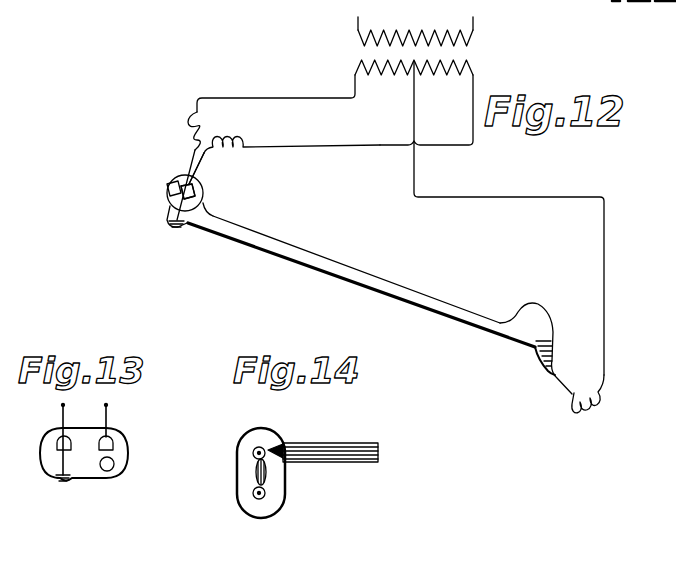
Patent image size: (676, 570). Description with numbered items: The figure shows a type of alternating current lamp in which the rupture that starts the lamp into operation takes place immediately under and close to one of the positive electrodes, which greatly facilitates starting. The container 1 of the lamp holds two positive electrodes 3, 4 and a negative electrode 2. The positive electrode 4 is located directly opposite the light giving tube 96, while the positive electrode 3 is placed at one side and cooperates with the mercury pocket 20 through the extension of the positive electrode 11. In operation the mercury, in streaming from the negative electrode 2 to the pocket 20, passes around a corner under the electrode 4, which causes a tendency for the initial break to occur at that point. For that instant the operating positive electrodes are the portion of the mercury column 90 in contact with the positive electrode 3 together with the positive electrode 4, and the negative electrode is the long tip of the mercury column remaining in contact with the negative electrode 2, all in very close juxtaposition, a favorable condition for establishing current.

In FIG. 12, the container of the lamp 1 is at (368, 278).
In FIG. 12, the negative electrode 2 is at (541, 352).
In FIG. 12, the positive electrode 3 is at (166, 188).
In FIG. 13, the positive electrode 3 is at (57, 443).
In FIG. 14, the positive electrode 3 is at (257, 500).
In FIG. 12, the positive electrode 4 is at (194, 187).
In FIG. 13, the positive electrode 4 is at (113, 440).
In FIG. 14, the positive electrode 4 is at (254, 454).
In FIG. 13, the extension of the positive electrode 11 is at (63, 463).
In FIG. 13, the mercury pocket 20 is at (60, 479).
In FIG. 14, the mercury column 90 is at (256, 480).
In FIG. 13, the light giving tube 96 is at (105, 471).
In FIG. 14, the light giving tube 96 is at (317, 456).